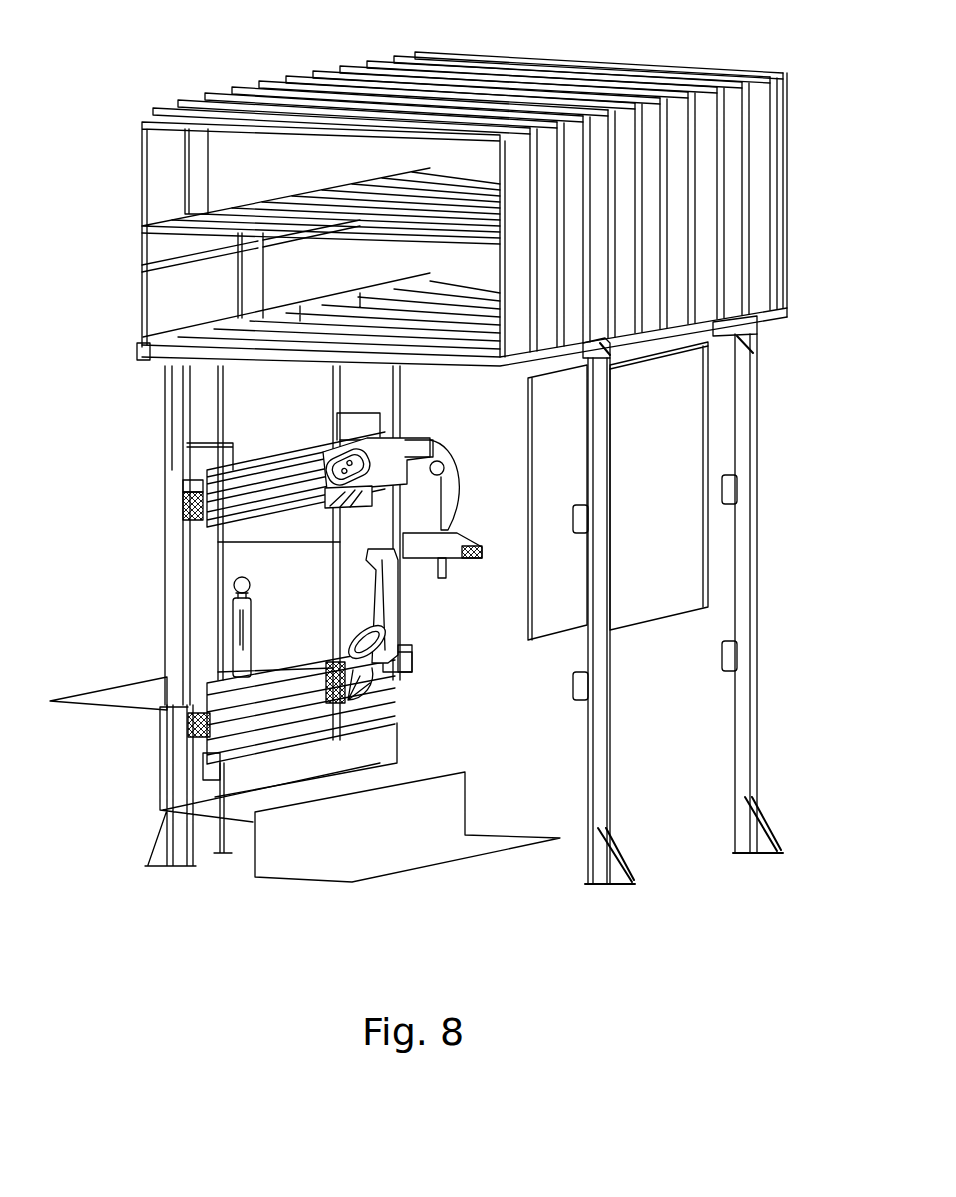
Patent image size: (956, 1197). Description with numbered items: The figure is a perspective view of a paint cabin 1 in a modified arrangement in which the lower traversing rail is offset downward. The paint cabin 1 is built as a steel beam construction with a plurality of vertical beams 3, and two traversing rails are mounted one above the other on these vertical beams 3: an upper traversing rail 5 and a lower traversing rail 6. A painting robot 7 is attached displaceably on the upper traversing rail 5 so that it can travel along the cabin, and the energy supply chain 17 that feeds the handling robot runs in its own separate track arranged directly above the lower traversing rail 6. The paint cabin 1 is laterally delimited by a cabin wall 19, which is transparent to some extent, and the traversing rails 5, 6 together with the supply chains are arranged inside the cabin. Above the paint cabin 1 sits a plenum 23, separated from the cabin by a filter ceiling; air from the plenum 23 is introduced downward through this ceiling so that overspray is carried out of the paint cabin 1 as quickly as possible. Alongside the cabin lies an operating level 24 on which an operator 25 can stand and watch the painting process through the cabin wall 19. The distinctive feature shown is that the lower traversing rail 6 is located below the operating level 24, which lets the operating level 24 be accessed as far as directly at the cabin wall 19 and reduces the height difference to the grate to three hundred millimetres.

The paint cabin 1 is at (456, 890).
The vertical beams 3 is at (747, 437).
The upper traversing rail 5 is at (183, 506).
The lower traversing rail 6 is at (186, 727).
The painting robot 7 is at (455, 442).
The energy supply chain 17 is at (418, 608).
The cabin wall 19 is at (688, 570).
The plenum 23 is at (128, 229).
The operating level 24 is at (238, 620).
The operator 25 is at (115, 694).